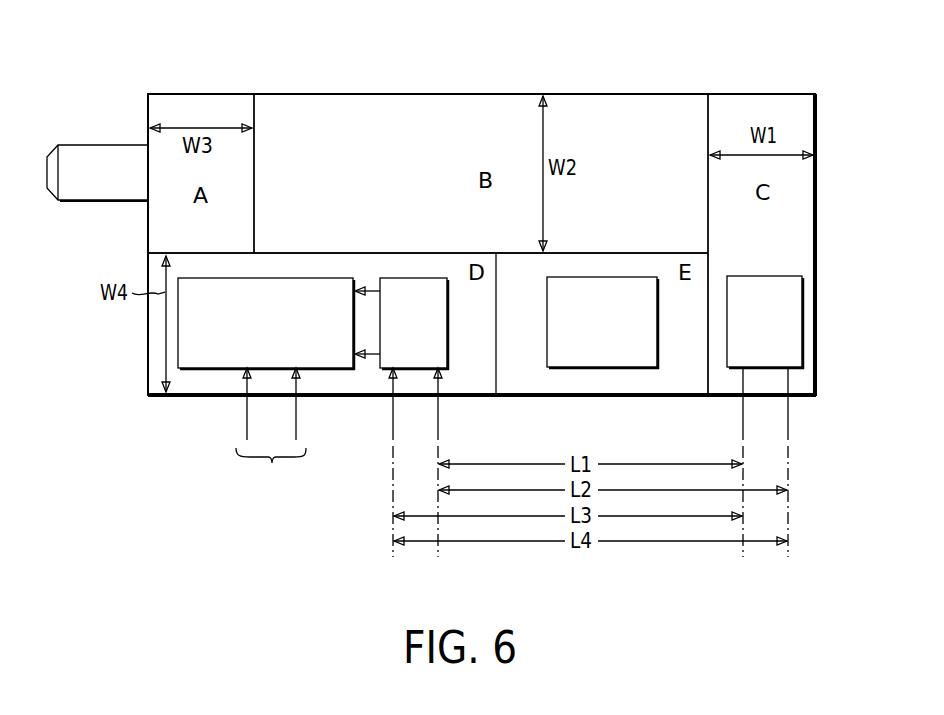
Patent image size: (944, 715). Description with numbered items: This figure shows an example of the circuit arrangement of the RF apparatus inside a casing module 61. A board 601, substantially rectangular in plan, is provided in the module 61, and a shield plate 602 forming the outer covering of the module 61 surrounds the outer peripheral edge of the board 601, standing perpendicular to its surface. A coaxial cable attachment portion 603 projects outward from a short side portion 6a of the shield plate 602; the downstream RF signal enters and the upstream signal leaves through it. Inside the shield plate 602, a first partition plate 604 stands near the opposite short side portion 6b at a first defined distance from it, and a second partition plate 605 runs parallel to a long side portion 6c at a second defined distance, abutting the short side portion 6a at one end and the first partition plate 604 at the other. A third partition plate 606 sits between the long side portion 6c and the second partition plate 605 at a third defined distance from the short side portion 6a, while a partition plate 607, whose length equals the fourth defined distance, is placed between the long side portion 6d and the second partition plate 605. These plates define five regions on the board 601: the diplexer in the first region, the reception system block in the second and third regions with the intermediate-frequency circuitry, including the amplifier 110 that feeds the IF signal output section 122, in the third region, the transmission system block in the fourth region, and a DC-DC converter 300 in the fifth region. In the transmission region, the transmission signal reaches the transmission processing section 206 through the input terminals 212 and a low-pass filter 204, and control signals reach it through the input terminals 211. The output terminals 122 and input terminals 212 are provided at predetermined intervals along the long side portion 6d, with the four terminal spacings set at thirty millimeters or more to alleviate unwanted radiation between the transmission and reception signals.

The casing module 61 is at (537, 32).
The short side portion 6a is at (177, 93).
The short side portion 6b is at (797, 93).
The long side portion 6c is at (433, 95).
The long side portion 6d is at (604, 398).
The board 601 is at (350, 110).
The shield plate 602 is at (596, 93).
The coaxial cable attachment portion 603 is at (97, 145).
The first partition plate 604 is at (707, 126).
The second partition plate 605 is at (418, 252).
The third partition plate 606 is at (255, 168).
The partition plate 607 is at (497, 343).
The transmission processing section 206 is at (291, 277).
The low-pass filter 204 is at (448, 352).
The DC-DC converter 300 is at (658, 345).
The amplifier 110 is at (766, 276).
The IF signal output section 122 is at (790, 404).
The input terminals 212 is at (392, 422).
The input terminals 211 is at (271, 430).